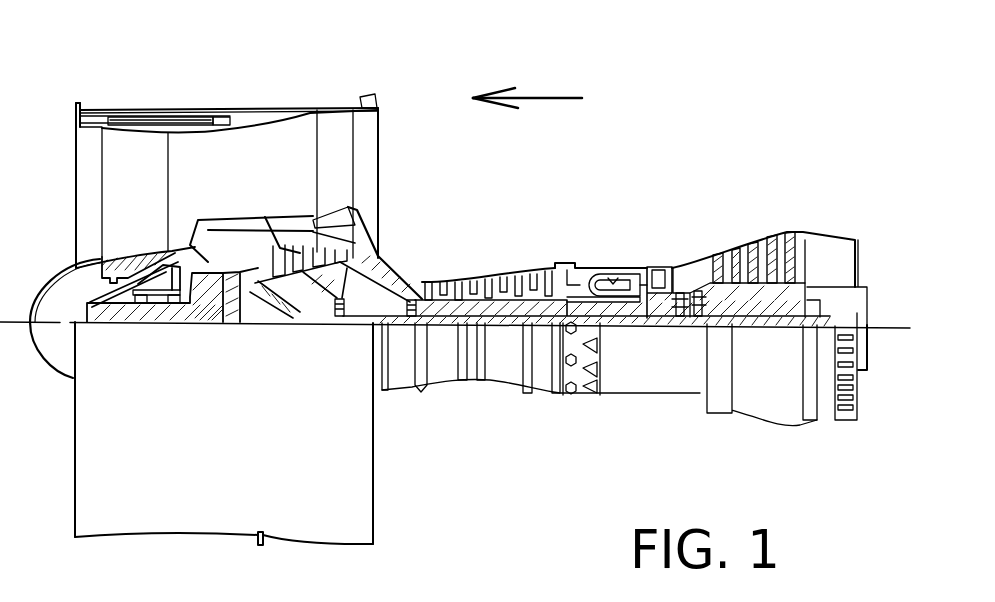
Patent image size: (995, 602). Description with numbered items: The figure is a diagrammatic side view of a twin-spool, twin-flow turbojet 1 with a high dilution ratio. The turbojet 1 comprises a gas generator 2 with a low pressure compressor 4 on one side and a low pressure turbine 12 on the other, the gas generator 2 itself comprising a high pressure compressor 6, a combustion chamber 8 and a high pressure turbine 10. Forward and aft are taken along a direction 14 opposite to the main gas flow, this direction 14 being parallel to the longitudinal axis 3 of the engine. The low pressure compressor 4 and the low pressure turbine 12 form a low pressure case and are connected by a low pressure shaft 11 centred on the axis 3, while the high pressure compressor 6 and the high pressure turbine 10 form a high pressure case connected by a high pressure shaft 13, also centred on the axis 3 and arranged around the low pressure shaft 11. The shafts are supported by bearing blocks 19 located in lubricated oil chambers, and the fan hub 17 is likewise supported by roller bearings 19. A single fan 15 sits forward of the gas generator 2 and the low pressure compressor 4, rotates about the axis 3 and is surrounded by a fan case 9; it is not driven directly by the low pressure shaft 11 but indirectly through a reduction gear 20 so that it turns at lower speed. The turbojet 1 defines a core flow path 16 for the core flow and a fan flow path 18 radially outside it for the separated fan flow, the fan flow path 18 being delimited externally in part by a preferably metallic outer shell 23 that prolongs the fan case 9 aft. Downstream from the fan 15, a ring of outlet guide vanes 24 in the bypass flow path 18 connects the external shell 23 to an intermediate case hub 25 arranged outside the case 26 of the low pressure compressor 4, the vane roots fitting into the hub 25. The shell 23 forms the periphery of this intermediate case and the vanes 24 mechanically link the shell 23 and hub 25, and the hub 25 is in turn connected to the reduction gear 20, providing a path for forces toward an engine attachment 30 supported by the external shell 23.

The turbojet 1 is at (549, 213).
The gas generator 2 is at (492, 388).
The longitudinal axis 3 is at (8, 330).
The low pressure compressor 4 is at (335, 252).
The high pressure compressor 6 is at (512, 305).
The combustion chamber 8 is at (590, 268).
The fan case 9 is at (188, 117).
The high pressure turbine 10 is at (658, 275).
The low pressure shaft 11 is at (410, 390).
The low pressure turbine 12 is at (762, 250).
The high pressure shaft 13 is at (650, 335).
The direction 14 is at (556, 97).
The fan 15 is at (118, 125).
The core flow path 16 is at (398, 273).
The fan hub 17 is at (141, 303).
The fan flow path 18 is at (235, 169).
The bearing blocks 19 is at (174, 303).
The reduction gear 20 is at (231, 312).
The outer shell 23 is at (340, 108).
The outlet guide vanes 24 is at (333, 163).
The intermediate case hub 25 is at (377, 256).
The case of the low pressure compressor 26 is at (292, 250).
The engine attachment 30 is at (378, 100).